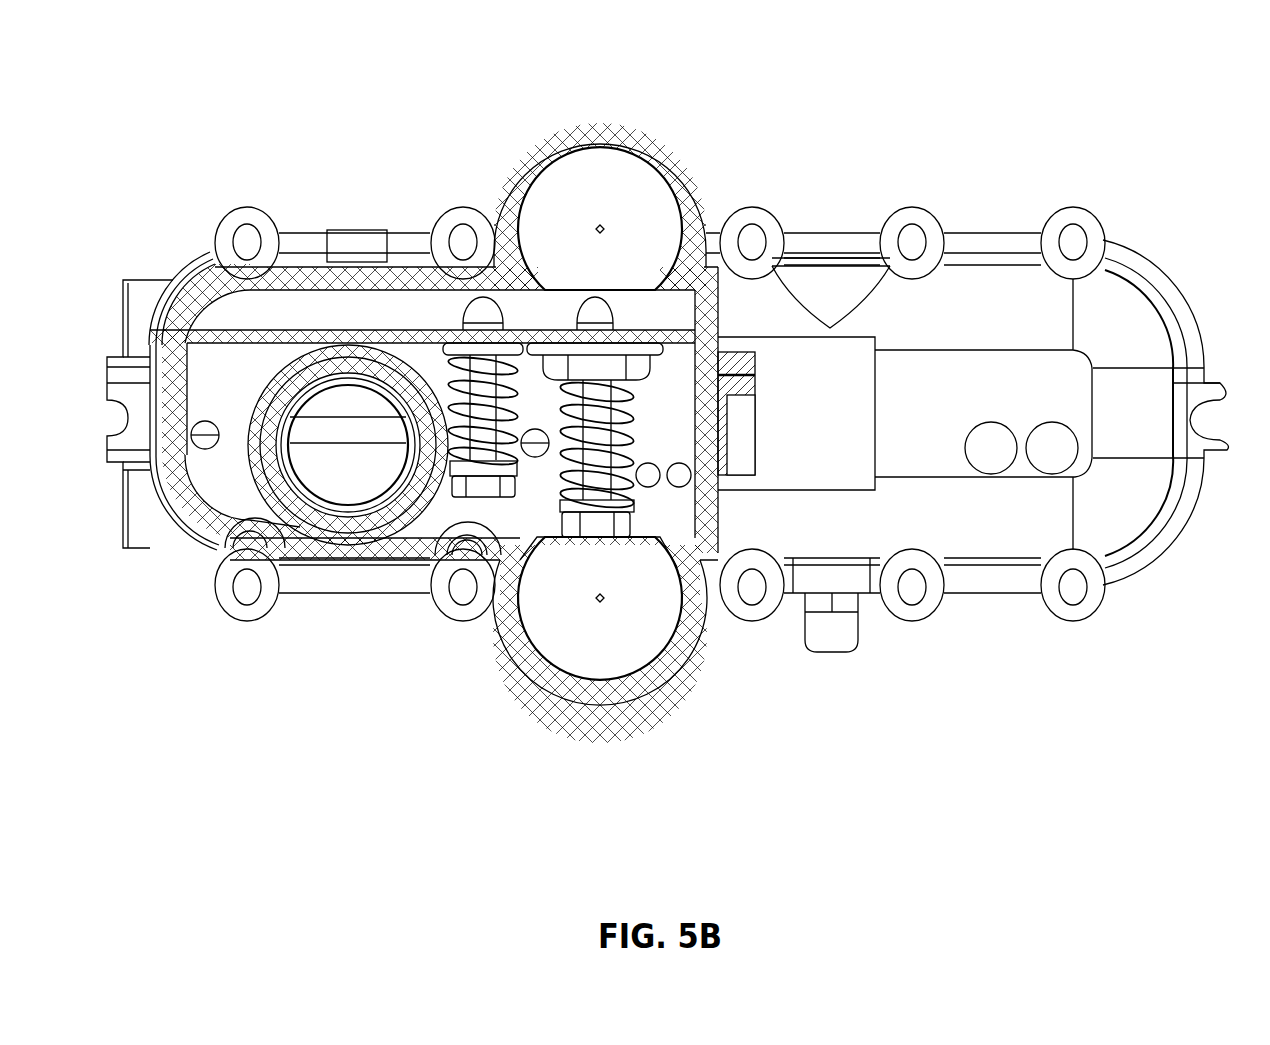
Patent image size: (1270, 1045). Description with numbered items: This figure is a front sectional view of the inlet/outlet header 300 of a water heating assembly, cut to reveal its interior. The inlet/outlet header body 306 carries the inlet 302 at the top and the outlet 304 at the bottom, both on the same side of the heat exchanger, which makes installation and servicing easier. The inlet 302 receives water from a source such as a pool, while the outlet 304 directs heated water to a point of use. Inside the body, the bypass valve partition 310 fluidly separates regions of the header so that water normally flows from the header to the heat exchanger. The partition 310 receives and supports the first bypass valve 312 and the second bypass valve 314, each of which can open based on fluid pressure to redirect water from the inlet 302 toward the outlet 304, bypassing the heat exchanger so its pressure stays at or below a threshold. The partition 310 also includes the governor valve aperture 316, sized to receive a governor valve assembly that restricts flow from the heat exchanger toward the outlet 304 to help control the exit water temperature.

The inlet/outlet header 300 is at (205, 67).
The inlet 302 is at (605, 185).
The outlet 304 is at (609, 634).
The inlet/outlet header body 306 is at (822, 233).
The bypass valve partition 310 is at (217, 327).
The first bypass valve 312 is at (577, 307).
The second bypass valve 314 is at (465, 318).
The governor valve aperture 316 is at (348, 462).